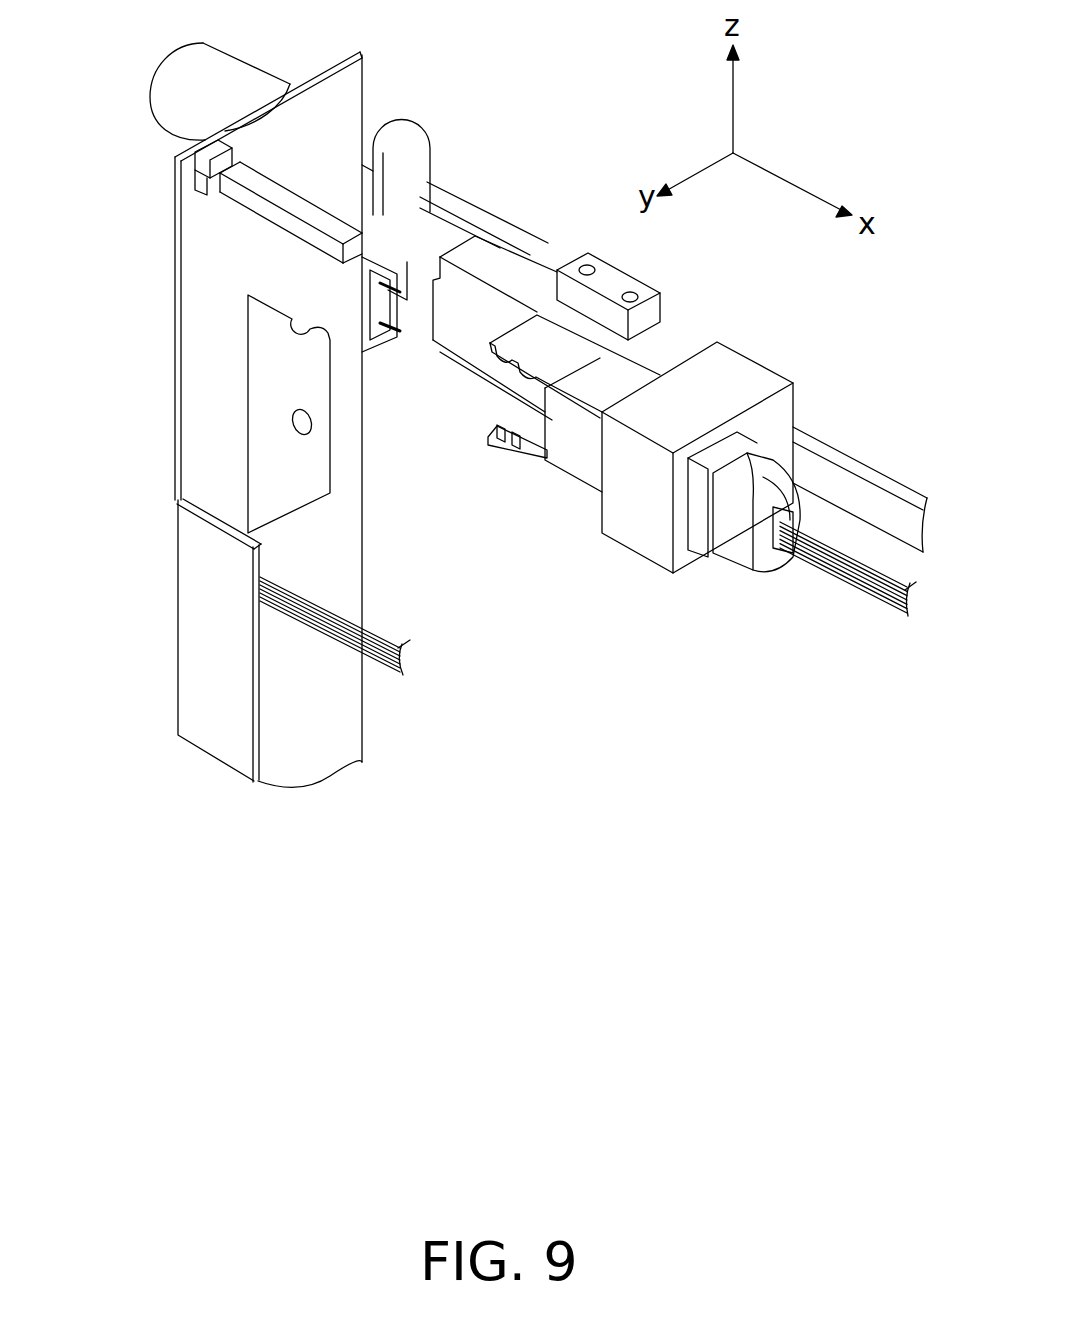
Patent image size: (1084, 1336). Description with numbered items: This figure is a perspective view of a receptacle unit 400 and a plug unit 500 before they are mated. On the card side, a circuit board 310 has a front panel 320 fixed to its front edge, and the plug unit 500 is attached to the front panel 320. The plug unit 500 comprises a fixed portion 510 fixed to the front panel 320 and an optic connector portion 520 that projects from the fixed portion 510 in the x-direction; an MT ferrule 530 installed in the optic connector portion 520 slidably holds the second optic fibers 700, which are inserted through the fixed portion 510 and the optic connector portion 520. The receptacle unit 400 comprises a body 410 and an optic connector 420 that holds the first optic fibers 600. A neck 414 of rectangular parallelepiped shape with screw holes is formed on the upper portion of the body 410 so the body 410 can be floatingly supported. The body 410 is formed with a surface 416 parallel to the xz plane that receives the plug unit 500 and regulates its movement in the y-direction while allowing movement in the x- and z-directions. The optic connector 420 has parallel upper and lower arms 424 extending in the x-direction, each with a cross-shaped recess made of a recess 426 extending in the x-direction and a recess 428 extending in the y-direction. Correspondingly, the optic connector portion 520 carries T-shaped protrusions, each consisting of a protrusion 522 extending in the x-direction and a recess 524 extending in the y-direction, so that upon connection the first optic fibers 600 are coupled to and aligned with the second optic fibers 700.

The circuit board 310 is at (597, 713).
The front panel 320 is at (332, 738).
The receptacle unit 400 is at (828, 343).
The body 410 is at (637, 533).
The neck 414 is at (613, 280).
The surface 416 is at (463, 275).
The optic connector 420 is at (567, 457).
The arm 424 is at (600, 377).
The recess 426 is at (523, 414).
The recess 428 is at (500, 447).
The plug unit 500 is at (193, 265).
The fixed portion 510 is at (208, 428).
The optic connector portion 520 is at (275, 237).
The protrusion 522 is at (383, 267).
The recess 524 is at (372, 232).
The MT ferrule 530 is at (387, 352).
The first optic fibers 600 is at (850, 582).
The second optic fibers 700 is at (347, 623).